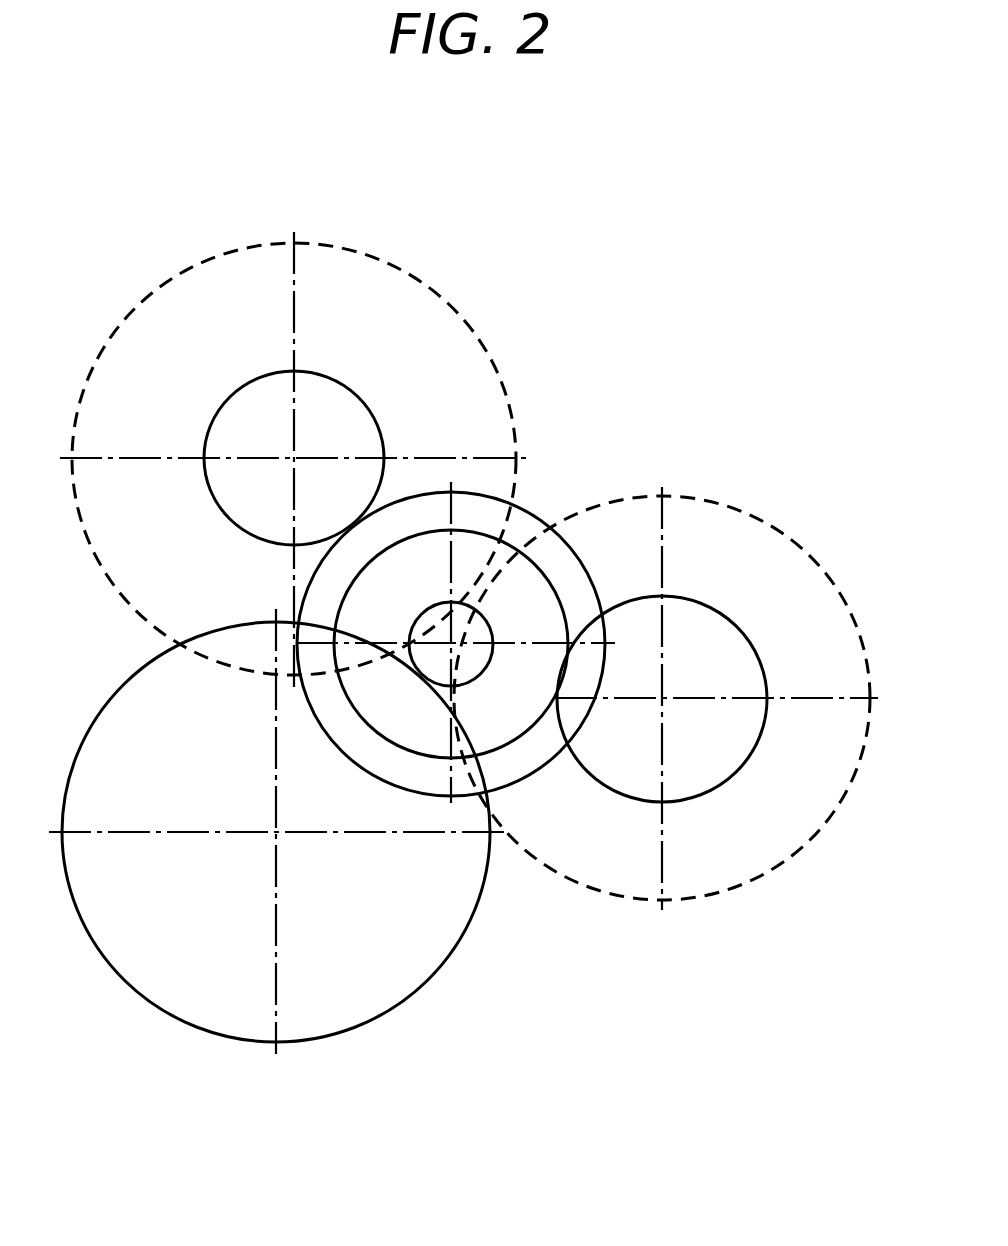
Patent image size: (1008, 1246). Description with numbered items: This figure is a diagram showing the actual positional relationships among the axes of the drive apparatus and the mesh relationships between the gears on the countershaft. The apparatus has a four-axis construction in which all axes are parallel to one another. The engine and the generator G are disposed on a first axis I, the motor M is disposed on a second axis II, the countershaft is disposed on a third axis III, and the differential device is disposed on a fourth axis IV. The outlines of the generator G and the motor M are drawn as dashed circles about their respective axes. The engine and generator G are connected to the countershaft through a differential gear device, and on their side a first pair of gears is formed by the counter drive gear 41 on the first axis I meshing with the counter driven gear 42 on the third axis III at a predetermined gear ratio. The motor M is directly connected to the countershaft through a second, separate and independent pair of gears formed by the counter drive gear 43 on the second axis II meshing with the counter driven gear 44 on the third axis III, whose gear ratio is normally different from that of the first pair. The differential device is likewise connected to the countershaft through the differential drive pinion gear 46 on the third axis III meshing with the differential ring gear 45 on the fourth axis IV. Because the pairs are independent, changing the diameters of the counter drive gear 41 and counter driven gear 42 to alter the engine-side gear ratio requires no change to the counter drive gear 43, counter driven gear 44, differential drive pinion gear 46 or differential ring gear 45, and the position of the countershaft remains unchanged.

The counter drive gear 41 is at (767, 681).
The counter driven gear 42 is at (515, 744).
The counter drive gear 43 is at (260, 377).
The counter driven gear 44 is at (541, 520).
The differential ring gear 45 is at (452, 953).
The differential drive pinion gear 46 is at (415, 617).
The motor M is at (469, 319).
The generator G is at (745, 514).
The first axis I is at (663, 702).
The second axis II is at (292, 457).
The third axis III is at (448, 653).
The fourth axis IV is at (275, 838).